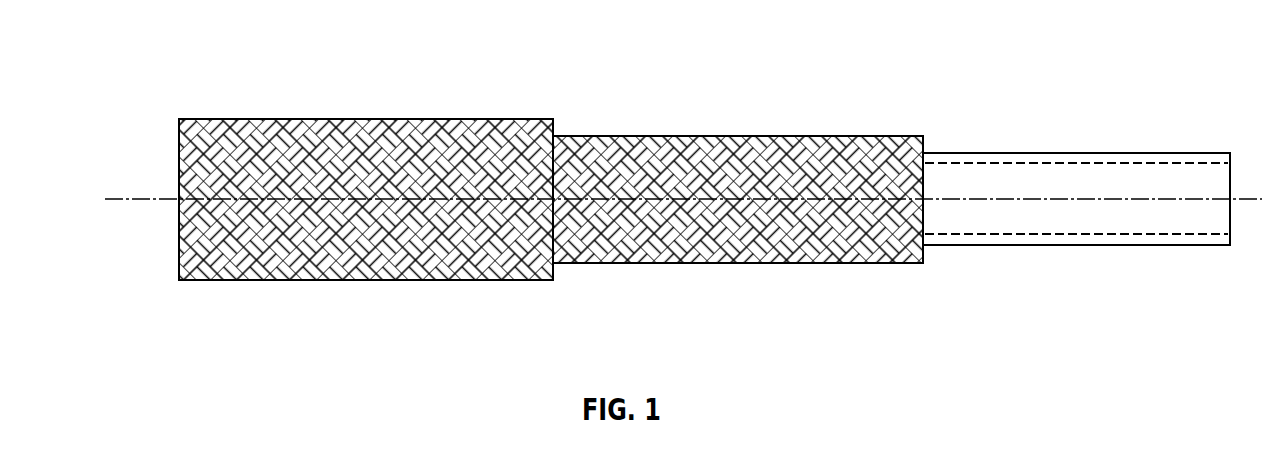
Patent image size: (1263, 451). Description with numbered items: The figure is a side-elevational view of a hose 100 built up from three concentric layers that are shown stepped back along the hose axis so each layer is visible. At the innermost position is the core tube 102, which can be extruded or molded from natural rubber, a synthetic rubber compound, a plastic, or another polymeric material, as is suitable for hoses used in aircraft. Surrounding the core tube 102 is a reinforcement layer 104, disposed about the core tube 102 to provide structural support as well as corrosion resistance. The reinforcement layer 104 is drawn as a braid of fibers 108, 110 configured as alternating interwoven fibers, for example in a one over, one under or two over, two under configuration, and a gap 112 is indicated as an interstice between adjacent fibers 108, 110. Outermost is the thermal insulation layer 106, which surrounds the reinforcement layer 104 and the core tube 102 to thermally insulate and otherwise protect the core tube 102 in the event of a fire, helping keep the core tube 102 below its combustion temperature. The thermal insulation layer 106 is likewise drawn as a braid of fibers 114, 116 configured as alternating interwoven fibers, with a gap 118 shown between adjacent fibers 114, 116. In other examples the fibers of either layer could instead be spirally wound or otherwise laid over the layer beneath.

The hose 100 is at (486, 79).
The core tube 102 is at (998, 153).
The reinforcement layer 104 is at (612, 136).
The thermal insulation layer 106 is at (236, 119).
The fiber 108 is at (845, 218).
The fiber 110 is at (790, 243).
The gap 112 is at (842, 243).
The fiber 114 is at (481, 230).
The fiber 116 is at (403, 262).
The gap 118 is at (484, 255).